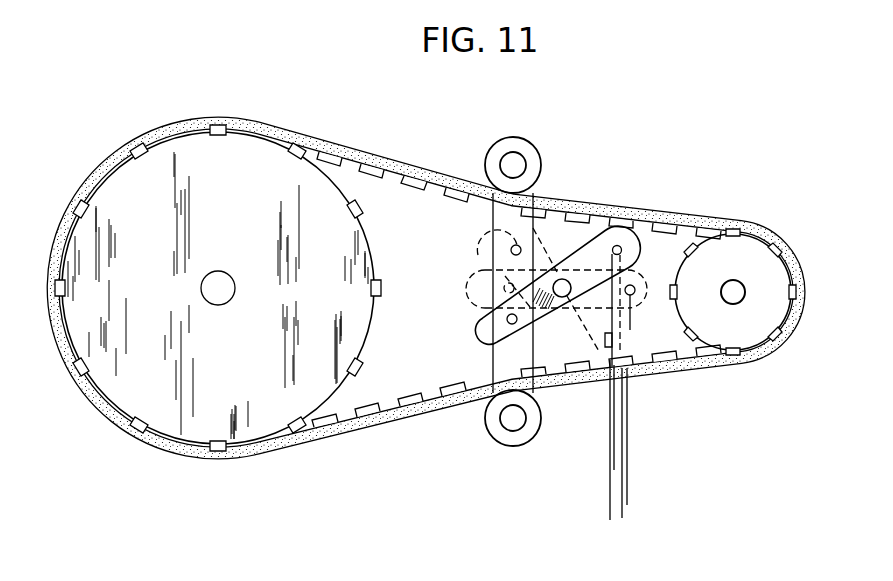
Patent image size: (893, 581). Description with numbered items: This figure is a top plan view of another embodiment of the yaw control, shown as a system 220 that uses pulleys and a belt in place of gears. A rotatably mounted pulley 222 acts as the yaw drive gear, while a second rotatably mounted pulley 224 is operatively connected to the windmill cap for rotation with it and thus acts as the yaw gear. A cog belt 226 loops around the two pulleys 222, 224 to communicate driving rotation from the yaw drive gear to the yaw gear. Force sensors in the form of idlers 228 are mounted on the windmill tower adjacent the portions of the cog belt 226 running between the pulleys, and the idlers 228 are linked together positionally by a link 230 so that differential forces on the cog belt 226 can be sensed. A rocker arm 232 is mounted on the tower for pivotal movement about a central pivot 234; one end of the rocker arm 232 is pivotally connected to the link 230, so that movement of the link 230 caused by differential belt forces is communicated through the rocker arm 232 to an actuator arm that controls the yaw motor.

The system 220 is at (140, 108).
The pulley 222 is at (758, 257).
The pulley 224 is at (240, 172).
The cog belt 226 is at (380, 448).
The idlers 228 is at (513, 163).
The link 230 is at (508, 230).
The rocker arm 232 is at (612, 247).
The central pivot 234 is at (682, 265).